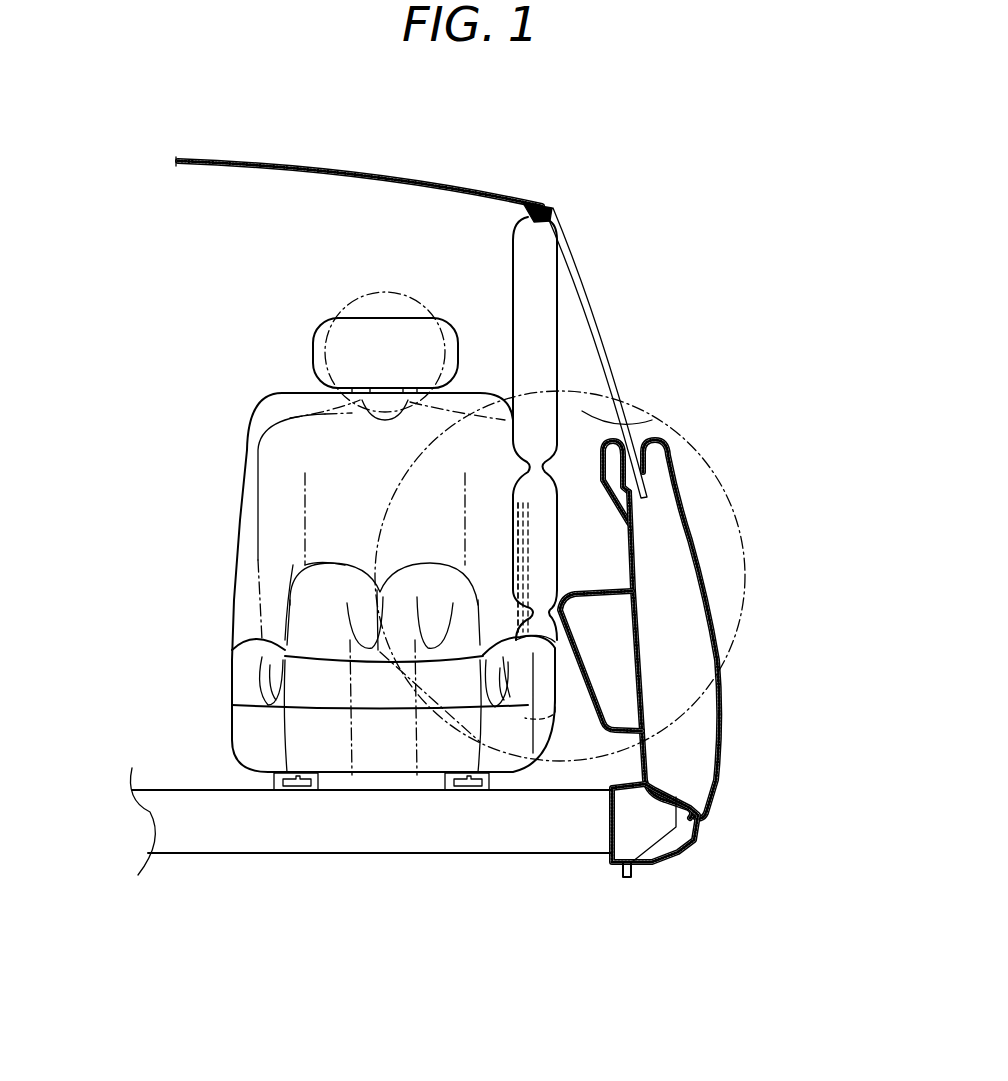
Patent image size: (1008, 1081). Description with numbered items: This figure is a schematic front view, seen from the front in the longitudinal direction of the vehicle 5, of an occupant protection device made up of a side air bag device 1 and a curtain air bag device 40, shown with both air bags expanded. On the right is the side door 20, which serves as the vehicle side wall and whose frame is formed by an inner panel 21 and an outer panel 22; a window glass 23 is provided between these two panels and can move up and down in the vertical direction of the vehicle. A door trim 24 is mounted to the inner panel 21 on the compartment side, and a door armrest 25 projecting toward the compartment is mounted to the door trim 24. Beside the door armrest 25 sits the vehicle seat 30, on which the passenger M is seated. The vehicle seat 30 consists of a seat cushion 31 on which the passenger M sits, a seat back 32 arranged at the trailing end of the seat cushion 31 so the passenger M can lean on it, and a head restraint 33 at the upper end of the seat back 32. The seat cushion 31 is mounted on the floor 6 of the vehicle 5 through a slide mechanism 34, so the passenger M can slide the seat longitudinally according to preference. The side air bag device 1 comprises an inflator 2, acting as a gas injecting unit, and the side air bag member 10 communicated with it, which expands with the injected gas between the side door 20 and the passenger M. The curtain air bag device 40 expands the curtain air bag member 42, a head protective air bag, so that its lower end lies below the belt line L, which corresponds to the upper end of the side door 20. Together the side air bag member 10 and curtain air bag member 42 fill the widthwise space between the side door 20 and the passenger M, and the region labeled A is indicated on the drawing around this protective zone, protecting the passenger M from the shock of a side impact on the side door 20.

The side air bag device 1 is at (595, 492).
The inflator 2 is at (538, 551).
The vehicle 5 is at (302, 152).
The floor 6 is at (197, 790).
The side air bag member 10 is at (558, 506).
The side door 20 is at (807, 331).
The inner panel 21 is at (640, 643).
The outer panel 22 is at (677, 468).
The window glass 23 is at (612, 365).
The door trim 24 is at (617, 462).
The door armrest 25 is at (634, 605).
The vehicle seat 30 is at (165, 352).
The seat cushion 31 is at (228, 640).
The seat back 32 is at (248, 493).
The head restraint 33 is at (313, 352).
The slide mechanism 34 is at (293, 792).
The curtain air bag device 40 is at (557, 209).
The curtain air bag member 42 is at (545, 292).
The deployment region A is at (650, 745).
The belt line L is at (609, 413).
The passenger M is at (362, 300).